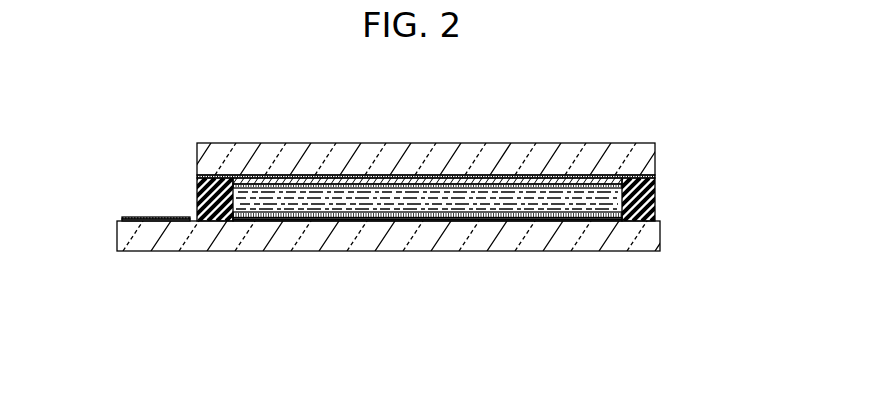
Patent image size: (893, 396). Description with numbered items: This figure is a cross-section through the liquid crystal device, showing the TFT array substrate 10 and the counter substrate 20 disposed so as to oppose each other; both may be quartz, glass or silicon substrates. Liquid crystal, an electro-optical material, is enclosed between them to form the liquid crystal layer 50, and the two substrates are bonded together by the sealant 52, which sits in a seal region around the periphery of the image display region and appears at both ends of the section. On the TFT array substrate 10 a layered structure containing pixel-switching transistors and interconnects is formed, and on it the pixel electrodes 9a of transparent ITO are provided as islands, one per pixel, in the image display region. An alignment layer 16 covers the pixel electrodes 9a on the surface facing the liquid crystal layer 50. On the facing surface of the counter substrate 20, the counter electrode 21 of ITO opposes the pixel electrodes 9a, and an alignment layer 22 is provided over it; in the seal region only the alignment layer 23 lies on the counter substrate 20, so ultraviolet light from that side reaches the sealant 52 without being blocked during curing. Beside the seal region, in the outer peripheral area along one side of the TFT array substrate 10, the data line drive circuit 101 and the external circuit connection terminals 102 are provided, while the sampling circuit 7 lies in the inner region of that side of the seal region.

The TFT array substrate 10 is at (472, 240).
The counter substrate 20 is at (405, 150).
The counter electrode 21 is at (562, 177).
The alignment layer 22 is at (503, 188).
The alignment layer 23 is at (445, 181).
The liquid crystal layer 50 is at (421, 205).
The sealant 52 is at (198, 199).
The alignment layer 16 is at (568, 208).
The pixel electrodes 9a is at (285, 222).
The sampling circuit 7 is at (243, 222).
The data line drive circuit 101 is at (160, 218).
The external circuit connection terminals 102 is at (133, 218).